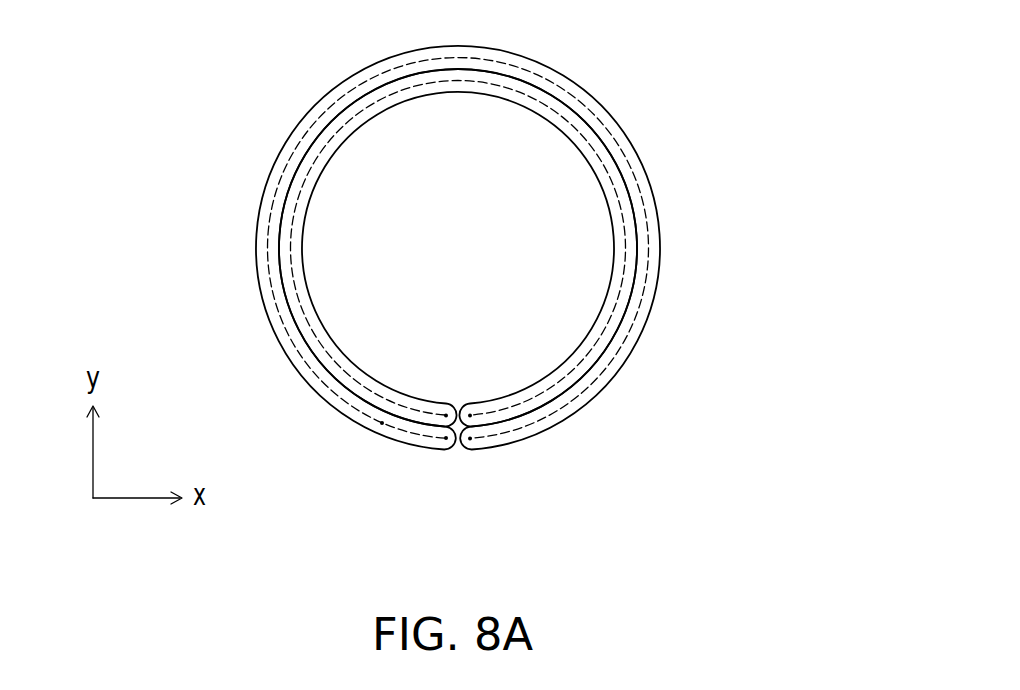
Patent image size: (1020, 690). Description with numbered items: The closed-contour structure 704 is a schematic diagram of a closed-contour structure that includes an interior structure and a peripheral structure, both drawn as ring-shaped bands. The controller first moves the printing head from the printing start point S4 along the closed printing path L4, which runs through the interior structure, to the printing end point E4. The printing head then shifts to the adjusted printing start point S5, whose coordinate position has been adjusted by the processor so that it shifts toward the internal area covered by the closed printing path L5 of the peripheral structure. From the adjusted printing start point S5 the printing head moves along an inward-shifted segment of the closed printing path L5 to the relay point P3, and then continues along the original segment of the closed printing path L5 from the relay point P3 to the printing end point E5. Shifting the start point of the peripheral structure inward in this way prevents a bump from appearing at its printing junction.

The antenna structure 704 is at (675, 61).
The closed printing path L5 is at (645, 300).
The closed printing path L4 is at (603, 338).
The printing start point S4 is at (446, 414).
The printing end point E4 is at (470, 414).
The adjusted printing start point S5 is at (446, 439).
The printing end point E5 is at (470, 440).
The relay point P3 is at (382, 423).